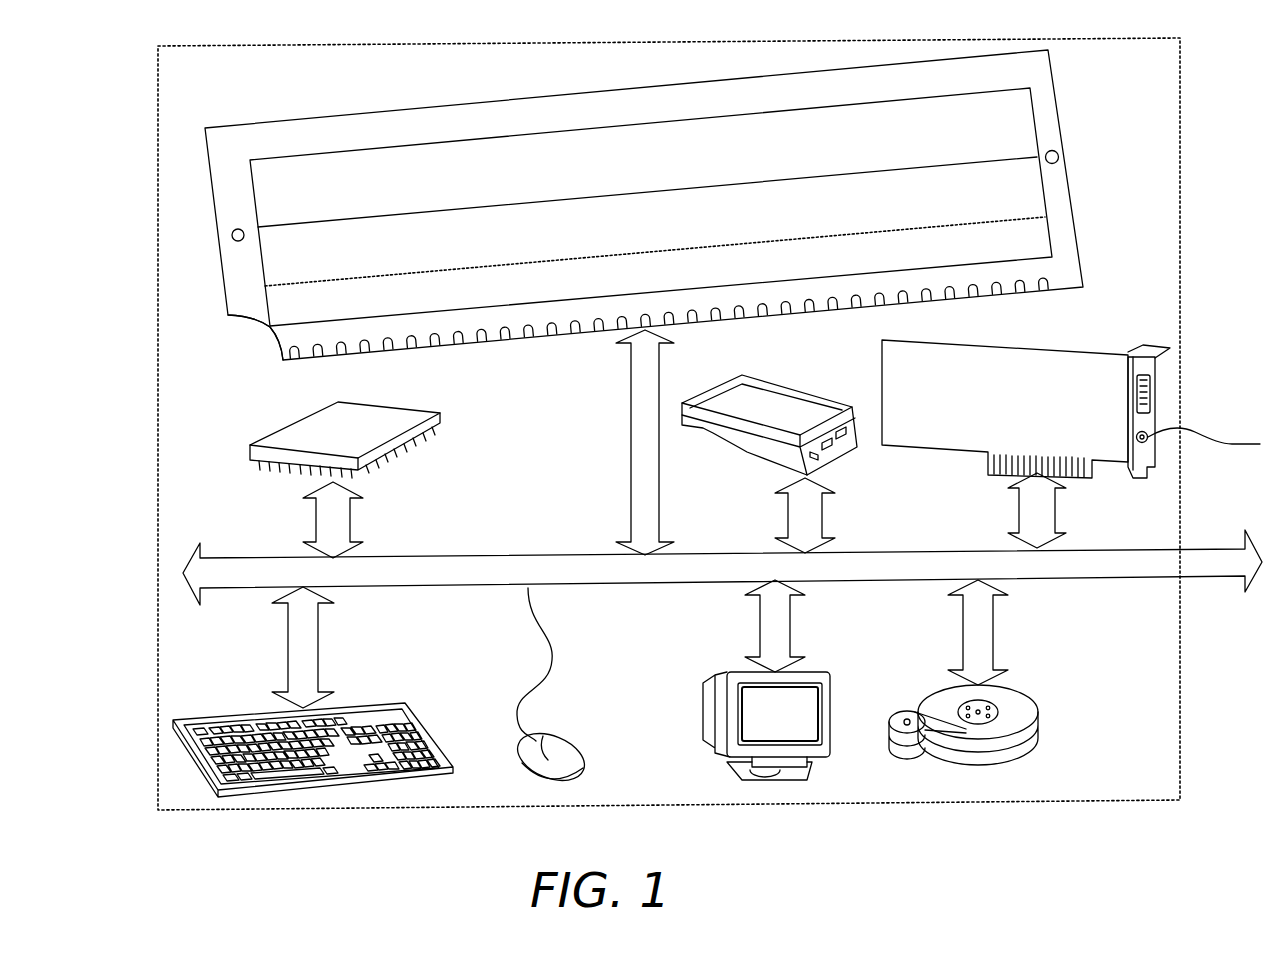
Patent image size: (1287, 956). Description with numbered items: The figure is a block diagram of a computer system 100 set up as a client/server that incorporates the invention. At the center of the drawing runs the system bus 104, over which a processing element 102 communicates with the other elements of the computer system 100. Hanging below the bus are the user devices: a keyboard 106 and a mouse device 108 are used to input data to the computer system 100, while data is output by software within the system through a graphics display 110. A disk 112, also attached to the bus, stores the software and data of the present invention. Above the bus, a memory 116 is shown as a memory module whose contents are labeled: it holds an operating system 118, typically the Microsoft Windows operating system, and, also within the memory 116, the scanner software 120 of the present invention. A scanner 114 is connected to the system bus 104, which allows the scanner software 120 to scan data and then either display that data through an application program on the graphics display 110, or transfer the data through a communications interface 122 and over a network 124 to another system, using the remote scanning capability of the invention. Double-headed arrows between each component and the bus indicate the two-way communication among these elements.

The computer system 100 is at (283, 811).
The processing element 102 is at (441, 413).
The system bus 104 is at (488, 556).
The keyboard 106 is at (417, 678).
The mouse device 108 is at (576, 733).
The graphics display 110 is at (834, 697).
The disk 112 is at (1019, 688).
The scanner 114 is at (804, 392).
The memory 116 is at (487, 100).
The operating system 118 is at (270, 328).
The scanner software 120 is at (462, 205).
The communications interface 122 is at (1076, 344).
The network 124 is at (1201, 432).